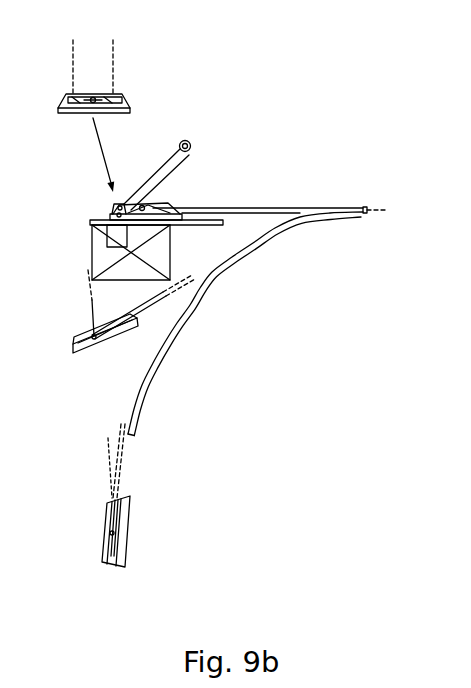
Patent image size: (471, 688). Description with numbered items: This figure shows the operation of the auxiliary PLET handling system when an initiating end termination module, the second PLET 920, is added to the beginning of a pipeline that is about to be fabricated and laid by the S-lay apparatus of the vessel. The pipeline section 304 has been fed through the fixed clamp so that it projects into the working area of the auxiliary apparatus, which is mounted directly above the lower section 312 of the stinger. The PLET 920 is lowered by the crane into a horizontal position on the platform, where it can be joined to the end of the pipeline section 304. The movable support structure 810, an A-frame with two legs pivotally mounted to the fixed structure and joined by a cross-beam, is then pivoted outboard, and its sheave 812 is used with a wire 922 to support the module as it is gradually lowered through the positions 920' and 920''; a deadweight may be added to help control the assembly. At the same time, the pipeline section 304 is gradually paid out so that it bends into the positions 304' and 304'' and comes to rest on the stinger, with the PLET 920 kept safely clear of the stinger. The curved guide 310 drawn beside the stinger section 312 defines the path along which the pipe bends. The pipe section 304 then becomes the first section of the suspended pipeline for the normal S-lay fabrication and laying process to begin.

The second PLET 920 is at (152, 130).
The movable support structure 810 is at (161, 163).
The sheave 812 is at (191, 145).
The pipeline section 304 is at (270, 191).
The curved track section 310 is at (254, 243).
The lower section of the stinger 312 is at (158, 367).
The wire 922 is at (93, 334).
The pipeline section position 304' is at (178, 308).
The PLET position 920' is at (93, 361).
The pipeline section position 304'' is at (166, 461).
The PLET position 920'' is at (164, 531).